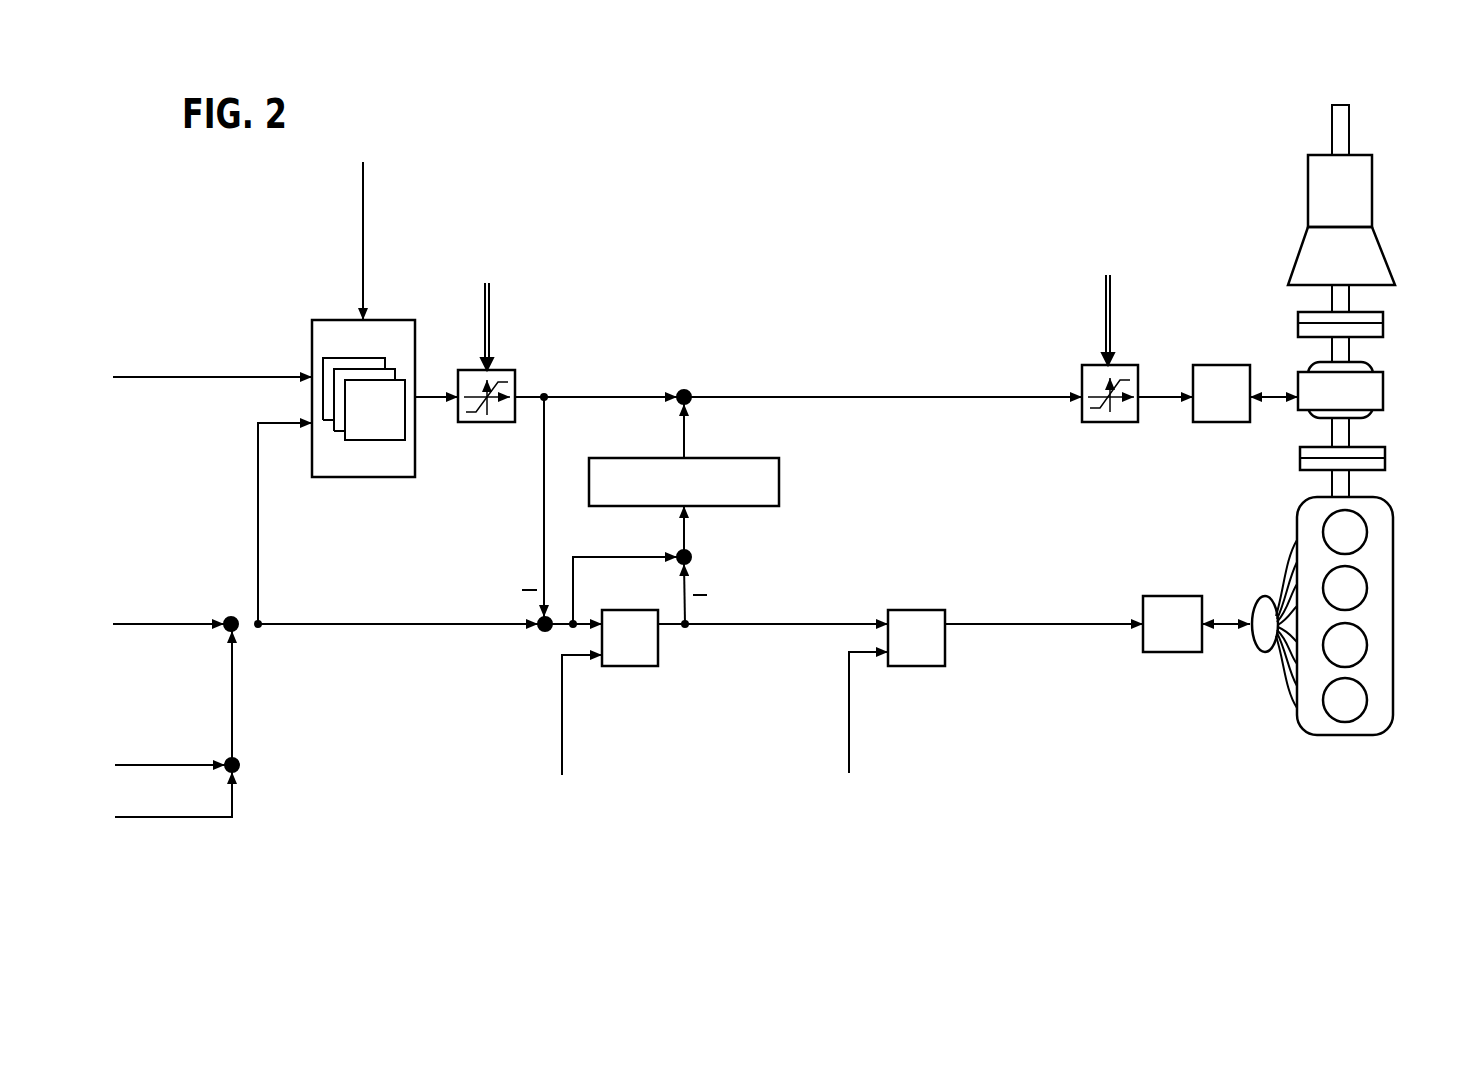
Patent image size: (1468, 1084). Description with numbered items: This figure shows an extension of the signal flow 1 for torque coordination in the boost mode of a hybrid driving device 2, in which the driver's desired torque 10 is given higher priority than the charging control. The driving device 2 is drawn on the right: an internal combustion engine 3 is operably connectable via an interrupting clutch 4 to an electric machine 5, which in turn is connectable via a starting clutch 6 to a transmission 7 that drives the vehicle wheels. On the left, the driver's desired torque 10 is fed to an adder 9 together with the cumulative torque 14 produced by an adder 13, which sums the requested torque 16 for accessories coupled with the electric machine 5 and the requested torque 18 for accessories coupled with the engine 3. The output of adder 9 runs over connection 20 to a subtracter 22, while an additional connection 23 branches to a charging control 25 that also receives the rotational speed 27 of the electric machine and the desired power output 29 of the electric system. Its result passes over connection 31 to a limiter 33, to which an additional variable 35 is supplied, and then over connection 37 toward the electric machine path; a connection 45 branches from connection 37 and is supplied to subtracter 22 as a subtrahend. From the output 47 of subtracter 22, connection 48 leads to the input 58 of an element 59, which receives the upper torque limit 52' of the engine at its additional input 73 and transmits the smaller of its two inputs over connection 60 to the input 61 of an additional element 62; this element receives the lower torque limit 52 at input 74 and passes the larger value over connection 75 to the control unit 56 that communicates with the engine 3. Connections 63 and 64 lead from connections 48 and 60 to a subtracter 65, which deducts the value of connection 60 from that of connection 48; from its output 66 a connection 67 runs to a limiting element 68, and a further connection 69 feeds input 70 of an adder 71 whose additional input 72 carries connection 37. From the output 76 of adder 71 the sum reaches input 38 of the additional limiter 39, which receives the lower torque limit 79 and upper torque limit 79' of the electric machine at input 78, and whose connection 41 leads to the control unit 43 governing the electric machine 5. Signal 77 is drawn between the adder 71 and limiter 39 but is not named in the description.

The signal flow 1 is at (797, 225).
The driving device 2 is at (1258, 190).
The internal combustion engine 3 is at (1395, 608).
The interrupting clutch 4 is at (1387, 458).
The electric machine 5 is at (1385, 392).
The starting clutch 6 is at (1385, 323).
The transmission 7 is at (1390, 258).
The adder 9 is at (227, 617).
The driver's desired torque 10 is at (178, 620).
The adder 13 is at (239, 768).
The cumulative torque 14 is at (232, 703).
The requested torque 16 is at (178, 763).
The requested torque 18 is at (178, 820).
The connection 20 is at (407, 630).
The subtracter 22 is at (538, 630).
The additional connection 23 is at (258, 556).
The charging control 25 is at (383, 477).
The rotational speed 27 is at (217, 375).
The desired power output 29 is at (363, 236).
The connection 31 is at (430, 392).
The limiter 33 is at (487, 422).
The additional variable 35 is at (490, 320).
The connection 37 is at (595, 393).
The input 38 is at (1080, 390).
The additional limiter 39 is at (1110, 422).
The connection 41 is at (1160, 394).
The control unit 43 is at (1222, 422).
The additional connection 45 is at (540, 541).
The output 47 is at (551, 632).
The connection 48 is at (556, 613).
The lower torque limit 52 is at (804, 762).
The upper torque limit 52' is at (516, 762).
The control unit 56 is at (1172, 655).
The input 58 is at (593, 613).
The element 59 is at (650, 668).
The additional connection 60 is at (792, 630).
The input 61 is at (885, 605).
The additional element 62 is at (915, 668).
The connection 63 is at (665, 626).
The connection 64 is at (690, 604).
The subtracter 65 is at (693, 561).
The output 66 is at (692, 552).
The connection 67 is at (690, 531).
The limiting element 68 is at (779, 470).
The further connection 69 is at (684, 438).
The input 70 is at (690, 402).
The adder 71 is at (687, 390).
The additional input 72 is at (678, 390).
The additional input 73 is at (600, 660).
The input 74 is at (882, 658).
The connection 75 is at (1048, 630).
The output 76 is at (690, 392).
The setpoint signal for electric machine 77 is at (885, 393).
The input 78 is at (1112, 365).
The lower torque limit 79 is at (1067, 316).
The upper torque limit 79' is at (1156, 276).